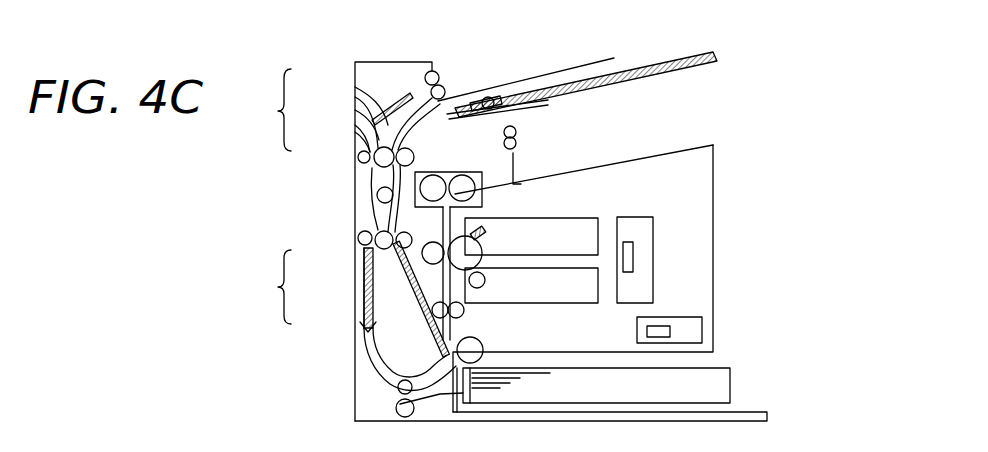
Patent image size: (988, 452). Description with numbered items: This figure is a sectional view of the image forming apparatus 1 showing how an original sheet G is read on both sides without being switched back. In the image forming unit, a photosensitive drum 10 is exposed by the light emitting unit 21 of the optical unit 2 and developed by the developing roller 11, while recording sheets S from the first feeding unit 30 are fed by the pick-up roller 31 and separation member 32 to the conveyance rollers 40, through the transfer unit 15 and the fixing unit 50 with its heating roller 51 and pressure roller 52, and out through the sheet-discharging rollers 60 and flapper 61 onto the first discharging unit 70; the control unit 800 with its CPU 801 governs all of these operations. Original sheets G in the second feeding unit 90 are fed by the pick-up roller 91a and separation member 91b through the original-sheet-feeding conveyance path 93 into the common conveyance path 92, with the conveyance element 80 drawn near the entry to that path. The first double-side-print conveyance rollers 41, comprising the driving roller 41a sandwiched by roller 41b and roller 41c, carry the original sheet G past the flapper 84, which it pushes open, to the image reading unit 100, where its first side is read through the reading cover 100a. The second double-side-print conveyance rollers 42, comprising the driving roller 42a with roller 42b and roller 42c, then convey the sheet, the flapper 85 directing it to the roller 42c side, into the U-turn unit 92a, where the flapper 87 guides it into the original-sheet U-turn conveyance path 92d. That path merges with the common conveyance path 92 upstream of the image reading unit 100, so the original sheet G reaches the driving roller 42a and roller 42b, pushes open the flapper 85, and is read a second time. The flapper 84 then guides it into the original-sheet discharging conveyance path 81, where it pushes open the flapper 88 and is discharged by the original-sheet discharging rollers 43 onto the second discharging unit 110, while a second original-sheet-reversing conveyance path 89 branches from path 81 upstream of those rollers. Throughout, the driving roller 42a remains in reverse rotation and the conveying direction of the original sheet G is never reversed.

The image forming apparatus 1 is at (714, 199).
The optical unit 2 is at (641, 217).
The photosensitive drum 10 is at (487, 235).
The developing roller 11 is at (486, 281).
The transfer unit 15 is at (396, 305).
The light emitting unit 21 is at (634, 254).
The first feeding unit 30 is at (755, 411).
The pick-up roller 31 is at (482, 345).
The separation member 32 is at (396, 408).
The conveyance rollers 40 is at (463, 311).
The first double-side-print conveyance rollers 41 is at (337, 118).
The driving roller 41a is at (375, 134).
The roller 41b is at (378, 120).
The roller 41c is at (366, 158).
The second double-side-print conveyance rollers 42 is at (332, 277).
The driving roller 42a is at (367, 263).
The roller 42b is at (364, 293).
The roller 42c is at (360, 250).
The original-sheet discharging rollers 43 is at (433, 72).
The fixing unit 50 is at (516, 183).
The heating roller 51 is at (477, 181).
The pressure roller 52 is at (429, 179).
The sheet-discharging rollers 60 is at (517, 132).
The flapper 61 is at (514, 164).
The first discharging unit 70 is at (667, 153).
The conveyance path 80 is at (447, 116).
The original-sheet discharging conveyance path 81 is at (378, 122).
The flapper 84 is at (375, 182).
The flapper 85 is at (372, 222).
The flapper 87 is at (440, 358).
The flapper 88 is at (392, 132).
The second original-sheet-reversing conveyance path 89 is at (383, 135).
The second feeding unit 90 is at (648, 68).
The pick-up roller 91a is at (504, 95).
The separation member 91b is at (548, 104).
The common conveyance path 92 is at (400, 201).
The U-turn unit 92a is at (380, 384).
The original-sheet U-turn conveyance path 92d is at (392, 370).
The original-sheet-feeding conveyance path 93 is at (489, 97).
The image reading unit 100 is at (373, 216).
The reading cover 100a is at (377, 196).
The second discharging unit 110 is at (585, 60).
The control unit 800 is at (681, 317).
The CPU 801 is at (672, 331).
The original sheet G is at (688, 57).
The recording sheet S is at (725, 373).